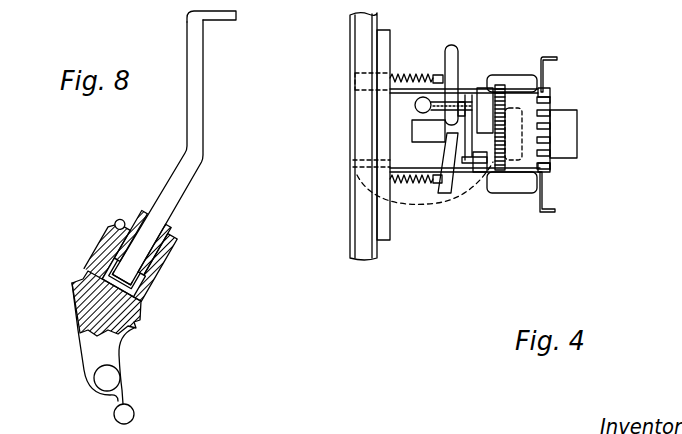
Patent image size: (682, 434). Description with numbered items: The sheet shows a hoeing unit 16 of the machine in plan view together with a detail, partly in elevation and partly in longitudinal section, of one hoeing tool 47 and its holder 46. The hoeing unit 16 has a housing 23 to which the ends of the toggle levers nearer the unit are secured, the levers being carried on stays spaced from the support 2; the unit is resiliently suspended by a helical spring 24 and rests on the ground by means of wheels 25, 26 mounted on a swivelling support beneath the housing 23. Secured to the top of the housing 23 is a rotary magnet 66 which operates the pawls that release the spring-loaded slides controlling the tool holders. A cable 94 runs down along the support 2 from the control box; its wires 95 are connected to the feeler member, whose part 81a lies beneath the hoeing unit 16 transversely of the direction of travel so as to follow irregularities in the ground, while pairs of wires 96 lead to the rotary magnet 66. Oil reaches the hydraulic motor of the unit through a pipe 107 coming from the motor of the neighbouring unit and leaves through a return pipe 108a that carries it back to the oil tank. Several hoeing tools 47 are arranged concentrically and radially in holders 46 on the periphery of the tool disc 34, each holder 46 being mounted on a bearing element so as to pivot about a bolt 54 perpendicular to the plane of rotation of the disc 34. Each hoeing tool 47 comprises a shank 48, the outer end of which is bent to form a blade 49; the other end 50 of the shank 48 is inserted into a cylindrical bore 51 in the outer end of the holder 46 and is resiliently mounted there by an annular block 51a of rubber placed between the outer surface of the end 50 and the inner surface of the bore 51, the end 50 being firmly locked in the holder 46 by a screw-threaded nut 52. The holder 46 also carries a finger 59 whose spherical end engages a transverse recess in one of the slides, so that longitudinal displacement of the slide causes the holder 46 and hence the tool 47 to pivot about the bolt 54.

In FIG. 4, the support 2 is at (362, 58).
In FIG. 4, the hoeing unit 16 is at (565, 125).
In FIG. 4, the housing 23 is at (489, 172).
In FIG. 4, the helical spring 24 is at (400, 72).
In FIG. 4, the wheel 25 is at (525, 194).
In FIG. 4, the wheel 26 is at (510, 74).
In FIG. 4, the tool disc 34 is at (544, 167).
In FIG. 8, the holder 46 is at (72, 305).
In FIG. 8, the hoeing tool 47 is at (187, 148).
In FIG. 4, the hoeing tool 47 is at (551, 75).
In FIG. 8, the shank 48 is at (187, 148).
In FIG. 8, the blade 49 is at (222, 16).
In FIG. 8, the end of the shank 50 is at (132, 255).
In FIG. 8, the cylindrical bore 51 is at (128, 295).
In FIG. 8, the annular block of rubber 51a is at (165, 232).
In FIG. 8, the screw-threaded nut 52 is at (115, 220).
In FIG. 8, the bolt 54 is at (100, 382).
In FIG. 8, the finger 59 is at (128, 410).
In FIG. 4, the rotary magnet 66 is at (485, 112).
In FIG. 4, the part of the feeler member 81a is at (520, 138).
In FIG. 4, the cable 94 is at (382, 43).
In FIG. 4, the wires 95 is at (437, 205).
In FIG. 4, the pairs of wires 96 is at (410, 190).
In FIG. 4, the pipe 107 is at (447, 45).
In FIG. 4, the return pipe 108a is at (452, 187).